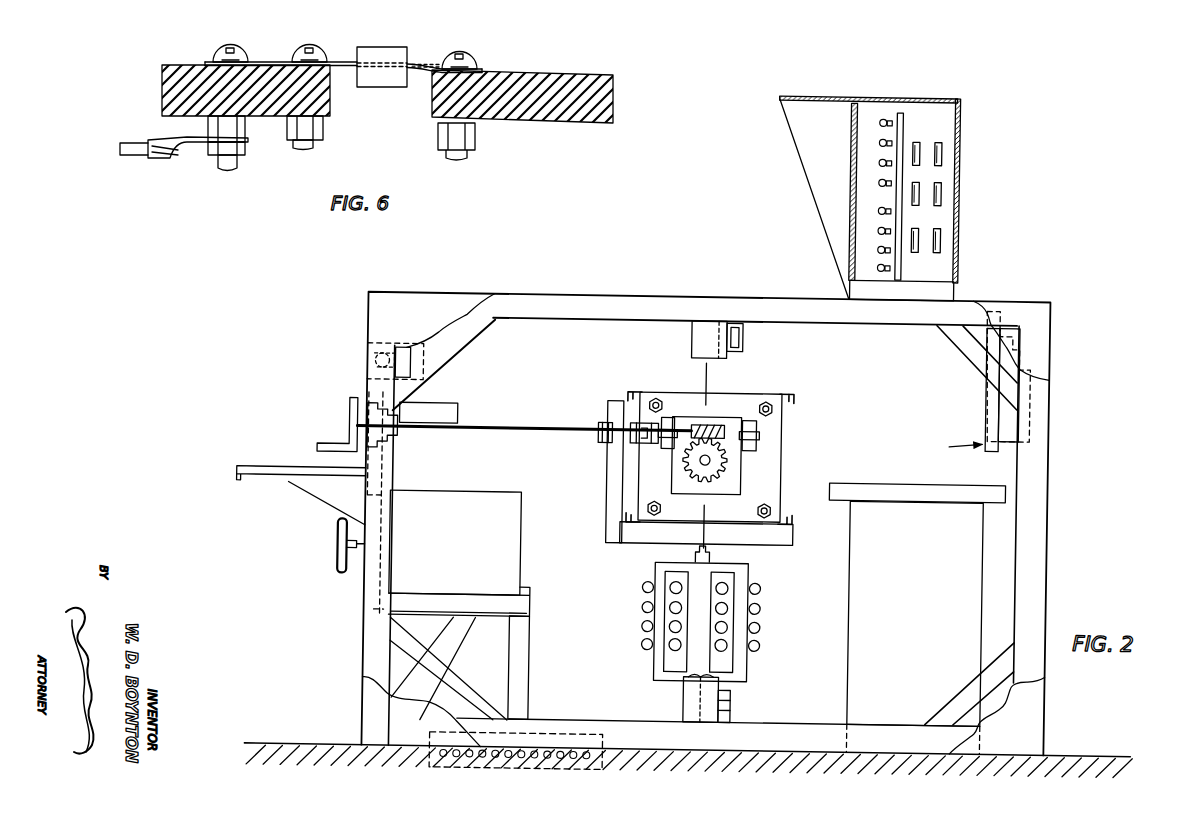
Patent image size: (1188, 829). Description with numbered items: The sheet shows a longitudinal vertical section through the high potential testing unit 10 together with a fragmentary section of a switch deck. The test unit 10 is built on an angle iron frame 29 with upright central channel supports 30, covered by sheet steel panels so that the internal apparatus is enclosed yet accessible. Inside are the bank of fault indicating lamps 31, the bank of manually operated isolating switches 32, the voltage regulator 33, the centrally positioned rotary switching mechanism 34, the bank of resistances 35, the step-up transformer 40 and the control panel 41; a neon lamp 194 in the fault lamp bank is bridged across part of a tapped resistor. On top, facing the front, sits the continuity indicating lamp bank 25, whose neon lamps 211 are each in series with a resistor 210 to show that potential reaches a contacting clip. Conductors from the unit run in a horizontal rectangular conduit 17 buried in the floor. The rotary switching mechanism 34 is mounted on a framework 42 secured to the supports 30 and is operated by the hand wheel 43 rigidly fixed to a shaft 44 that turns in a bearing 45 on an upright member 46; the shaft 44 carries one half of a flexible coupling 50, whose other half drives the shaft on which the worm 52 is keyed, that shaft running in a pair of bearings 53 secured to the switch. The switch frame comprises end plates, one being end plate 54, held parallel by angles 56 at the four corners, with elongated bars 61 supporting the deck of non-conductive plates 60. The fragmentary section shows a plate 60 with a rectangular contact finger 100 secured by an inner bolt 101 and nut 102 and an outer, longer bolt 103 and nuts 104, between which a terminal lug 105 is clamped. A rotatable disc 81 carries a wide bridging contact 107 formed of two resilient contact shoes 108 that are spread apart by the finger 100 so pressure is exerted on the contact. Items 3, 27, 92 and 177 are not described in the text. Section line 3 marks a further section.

In FIG. 2, the high potential testing unit 10 is at (521, 289).
In FIG. 2, the horizontal rectangular conduit 17 is at (584, 742).
In FIG. 2, the continuity indicating lamp bank 25 is at (796, 194).
In FIG. 2, the shelf 27 is at (236, 474).
In FIG. 2, the angle iron frame 29 is at (660, 304).
In FIG. 2, the upright central channel supports 30 is at (689, 339).
In FIG. 2, the bank of fault indicating lamps 31 is at (416, 359).
In FIG. 2, the bank of manually operated isolating switches 32 is at (462, 412).
In FIG. 2, the voltage regulator 33 is at (462, 494).
In FIG. 2, the rotary switching mechanism 34 is at (786, 436).
In FIG. 2, the bank of resistances 35 is at (636, 614).
In FIG. 2, the step-up transformer 40 is at (850, 562).
In FIG. 2, the control panel 41 is at (990, 407).
In FIG. 2, the framework 42 is at (793, 535).
In FIG. 2, the hand wheel 43 is at (348, 416).
In FIG. 2, the shaft 44 is at (558, 435).
In FIG. 2, the bearing 45 is at (598, 425).
In FIG. 2, the upright member 46 is at (606, 478).
In FIG. 2, the flexible coupling 50 is at (645, 445).
In FIG. 2, the worm 52 is at (710, 425).
In FIG. 2, the bearings 53 is at (666, 418).
In FIG. 2, the end plate 54 is at (780, 485).
In FIG. 2, the angles 56 is at (628, 394).
In FIG. 2, the elongated bars 61 is at (656, 399).
In FIG. 2, the worm gear 92 is at (711, 484).
In FIG. 2, the hand wheel 177 is at (338, 546).
In FIG. 2, the neon lamp 194 is at (364, 369).
In FIG. 2, the resistor 210 is at (937, 189).
In FIG. 2, the neon lamps 211 is at (874, 159).
In FIG. 2, the section line 3 is at (706, 367).
In FIG. 6, the non-conductive plates 60 is at (188, 66).
In FIG. 6, the rotatable disc 81 is at (538, 73).
In FIG. 6, the contact fingers 100 is at (341, 62).
In FIG. 6, the inner row of bolts 101 is at (306, 57).
In FIG. 6, the nuts 102 is at (328, 130).
In FIG. 6, the outer row of bolts 103 is at (232, 58).
In FIG. 6, the nuts 104 is at (248, 135).
In FIG. 6, the terminal lug 105 is at (175, 158).
In FIG. 6, the bridging contact 107 is at (357, 92).
In FIG. 6, the resilient contact shoes 108 is at (414, 64).